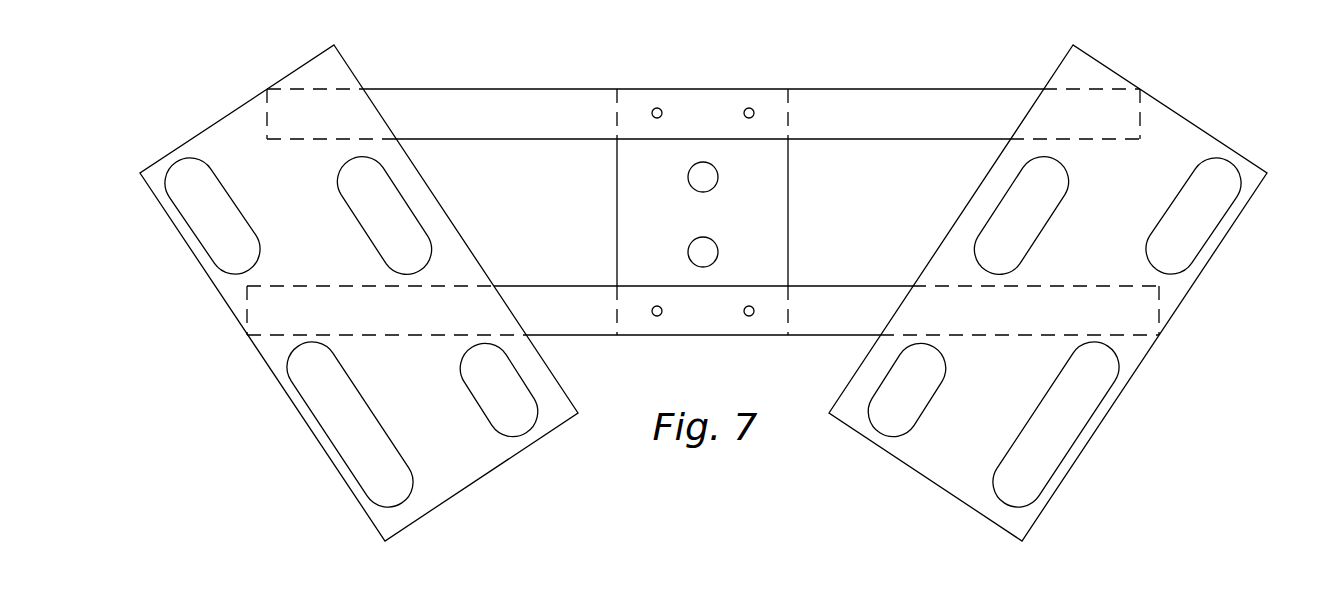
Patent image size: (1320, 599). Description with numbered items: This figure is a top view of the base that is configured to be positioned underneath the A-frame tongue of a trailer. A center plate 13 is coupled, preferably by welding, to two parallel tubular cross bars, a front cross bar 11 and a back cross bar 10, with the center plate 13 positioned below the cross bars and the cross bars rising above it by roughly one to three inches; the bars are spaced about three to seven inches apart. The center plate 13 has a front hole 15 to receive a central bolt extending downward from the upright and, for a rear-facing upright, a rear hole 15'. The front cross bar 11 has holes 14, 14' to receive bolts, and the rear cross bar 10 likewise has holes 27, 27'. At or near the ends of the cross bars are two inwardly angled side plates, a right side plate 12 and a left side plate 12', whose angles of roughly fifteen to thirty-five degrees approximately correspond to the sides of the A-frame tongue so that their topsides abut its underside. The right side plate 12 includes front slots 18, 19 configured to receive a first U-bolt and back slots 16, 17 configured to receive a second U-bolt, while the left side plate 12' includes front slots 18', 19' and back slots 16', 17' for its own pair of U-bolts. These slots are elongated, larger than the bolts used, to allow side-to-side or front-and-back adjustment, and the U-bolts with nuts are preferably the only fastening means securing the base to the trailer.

The back cross bar 10 is at (703, 114).
The front cross bar 11 is at (703, 310).
The right side plate 12 is at (359, 293).
The left side plate 12' is at (1048, 293).
The center plate 13 is at (788, 238).
The hole 14 is at (654, 353).
The hole 14' is at (760, 351).
The front hole 15 is at (673, 254).
The rear hole 15' is at (671, 184).
The back slot 16 is at (179, 216).
The back slot 16' is at (1233, 216).
The back slot 17 is at (412, 214).
The back slot 17' is at (996, 215).
The front slot 18 is at (350, 432).
The front slot 18' is at (1057, 434).
The front slot 19 is at (525, 411).
The front slot 19' is at (883, 410).
The hole 27 is at (671, 75).
The hole 27' is at (767, 73).